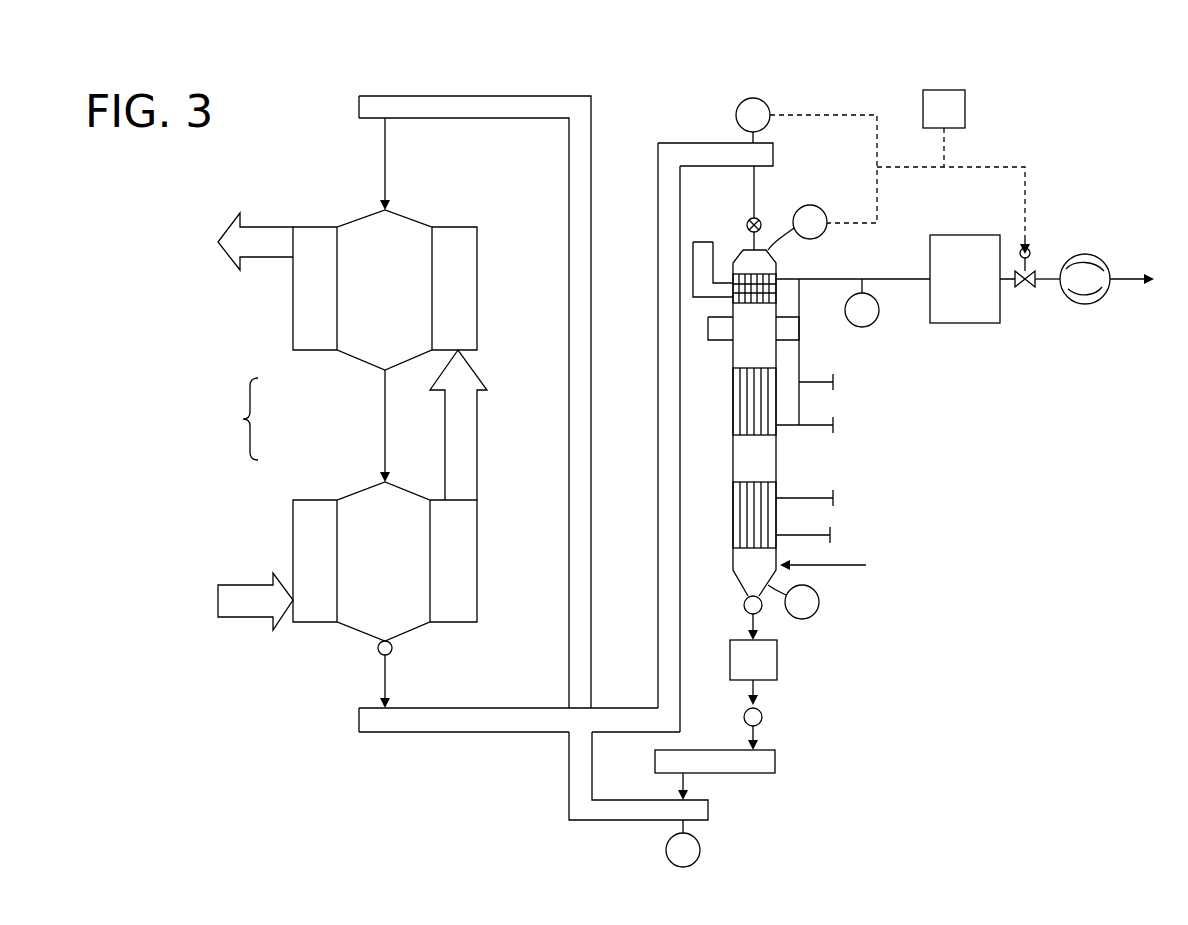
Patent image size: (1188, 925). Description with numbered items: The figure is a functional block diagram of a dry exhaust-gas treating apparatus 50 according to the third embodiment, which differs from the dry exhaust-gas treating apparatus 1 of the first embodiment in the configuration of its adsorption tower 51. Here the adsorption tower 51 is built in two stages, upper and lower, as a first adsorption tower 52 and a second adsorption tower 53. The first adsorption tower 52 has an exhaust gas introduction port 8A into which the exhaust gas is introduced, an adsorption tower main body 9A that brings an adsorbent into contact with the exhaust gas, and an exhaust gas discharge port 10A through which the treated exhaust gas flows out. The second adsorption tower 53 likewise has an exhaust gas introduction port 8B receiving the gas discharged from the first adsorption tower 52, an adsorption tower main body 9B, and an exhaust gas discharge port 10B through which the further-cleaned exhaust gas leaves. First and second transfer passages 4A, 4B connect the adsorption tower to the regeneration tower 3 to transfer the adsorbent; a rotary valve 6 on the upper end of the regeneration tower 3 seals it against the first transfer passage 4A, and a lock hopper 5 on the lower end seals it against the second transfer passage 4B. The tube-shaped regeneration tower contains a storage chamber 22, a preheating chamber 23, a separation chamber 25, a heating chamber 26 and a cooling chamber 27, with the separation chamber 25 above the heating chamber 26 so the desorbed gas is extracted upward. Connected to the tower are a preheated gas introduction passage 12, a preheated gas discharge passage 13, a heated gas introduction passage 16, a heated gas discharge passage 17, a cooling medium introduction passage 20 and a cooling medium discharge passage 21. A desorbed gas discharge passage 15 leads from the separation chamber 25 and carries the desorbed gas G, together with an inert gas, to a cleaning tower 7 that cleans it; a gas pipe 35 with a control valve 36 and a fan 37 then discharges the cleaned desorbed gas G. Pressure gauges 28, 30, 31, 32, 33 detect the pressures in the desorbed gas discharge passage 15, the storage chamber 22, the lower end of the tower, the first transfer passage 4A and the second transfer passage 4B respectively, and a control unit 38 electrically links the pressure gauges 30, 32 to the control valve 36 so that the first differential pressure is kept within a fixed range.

The dry exhaust-gas treating apparatus 1 is at (834, 566).
The regeneration tower 3 is at (912, 471).
The first transfer passage 4A is at (694, 143).
The second transfer passage 4B is at (497, 100).
The lock hopper 5 is at (779, 661).
The rotary valve 6 is at (747, 215).
The cleaning tower 7 is at (970, 235).
The exhaust gas introduction port 8A is at (284, 585).
The exhaust gas introduction port 8B is at (450, 358).
The adsorption tower main body 9A is at (360, 630).
The adsorption tower main body 9B is at (405, 237).
The exhaust gas discharge port 10A is at (470, 494).
The exhaust gas discharge port 10B is at (290, 245).
The preheated gas introduction passage 12 is at (690, 244).
The preheated gas discharge passage 13 is at (718, 262).
The desorbed gas discharge passage 15 is at (910, 282).
The heated gas introduction passage 16 is at (798, 428).
The heated gas discharge passage 17 is at (802, 380).
The cooling medium introduction passage 20 is at (808, 540).
The cooling medium discharge passage 21 is at (818, 492).
The storage chamber 22 is at (757, 248).
The preheating chamber 23 is at (780, 292).
The separation chamber 25 is at (733, 358).
The heating chamber 26 is at (733, 400).
The cooling chamber 27 is at (733, 527).
The pressure gauge 28 is at (862, 328).
The pressure gauge 30 is at (821, 207).
The pressure gauge 31 is at (816, 615).
The pressure gauge 32 is at (760, 99).
The pressure gauge 33 is at (701, 850).
The gas pipe 35 is at (1046, 282).
The control valve 36 is at (1034, 264).
The fan 37 is at (1083, 305).
The control unit 38 is at (966, 110).
The dry exhaust-gas treating apparatus 50 is at (325, 85).
The adsorption tower 51 is at (236, 419).
The first adsorption tower 52 is at (350, 478).
The second adsorption tower 53 is at (350, 368).
The desorbed gas G is at (1145, 280).